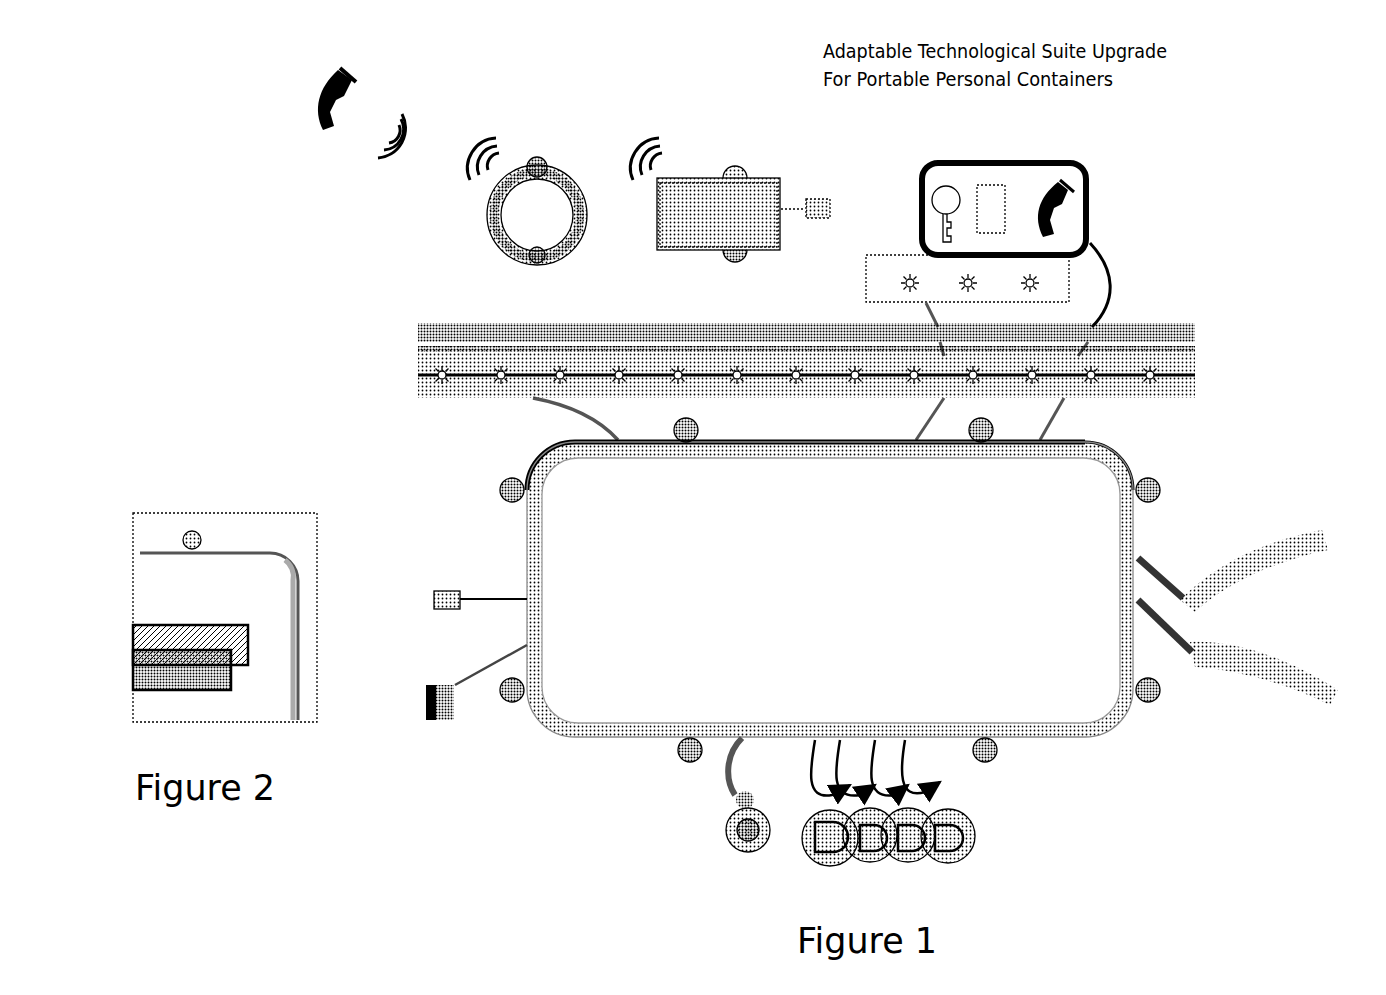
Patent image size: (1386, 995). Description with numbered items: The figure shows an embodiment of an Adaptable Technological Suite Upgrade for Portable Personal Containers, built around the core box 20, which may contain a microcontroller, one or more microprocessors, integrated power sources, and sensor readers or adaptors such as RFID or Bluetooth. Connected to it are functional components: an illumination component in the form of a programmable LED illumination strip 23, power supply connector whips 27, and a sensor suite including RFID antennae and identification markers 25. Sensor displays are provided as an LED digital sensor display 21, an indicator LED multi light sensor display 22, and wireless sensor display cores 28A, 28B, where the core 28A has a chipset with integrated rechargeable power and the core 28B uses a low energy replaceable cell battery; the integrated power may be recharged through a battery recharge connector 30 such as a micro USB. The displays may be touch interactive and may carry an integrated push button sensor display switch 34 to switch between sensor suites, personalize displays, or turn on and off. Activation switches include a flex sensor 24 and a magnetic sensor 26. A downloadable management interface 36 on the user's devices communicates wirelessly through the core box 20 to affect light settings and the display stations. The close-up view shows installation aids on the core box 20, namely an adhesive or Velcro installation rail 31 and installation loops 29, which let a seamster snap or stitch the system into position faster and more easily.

In FIG. 1, the core box 20 is at (830, 590).
In FIG. 2, the core box 20 is at (225, 617).
In FIG. 1, the digital sensor display 21 is at (1090, 186).
In FIG. 1, the multi light sensor display 22 is at (864, 283).
In FIG. 1, the LED illumination strip 23 is at (416, 360).
In FIG. 1, the flex sensor 24 is at (1250, 534).
In FIG. 1, the RFID antennae and identification discs markers 25 is at (976, 822).
In FIG. 1, the magnetic sensor 26 is at (728, 805).
In FIG. 1, the power connector whips 27 is at (443, 614).
In FIG. 1, the wireless sensor display core with chip set and integrated power 28A is at (705, 200).
In FIG. 1, the wireless sensor display core with chip set and removable cell battery 28B is at (527, 201).
In FIG. 1, the installation loop 29 is at (545, 163).
In FIG. 2, the installation loop 29 is at (203, 540).
In FIG. 1, the battery recharge connector 30 is at (832, 209).
In FIG. 2, the installation rail 31 is at (241, 670).
In FIG. 1, the push button sensor display switch 34 is at (537, 265).
In FIG. 1, the interface communication with user devices 36 is at (355, 140).